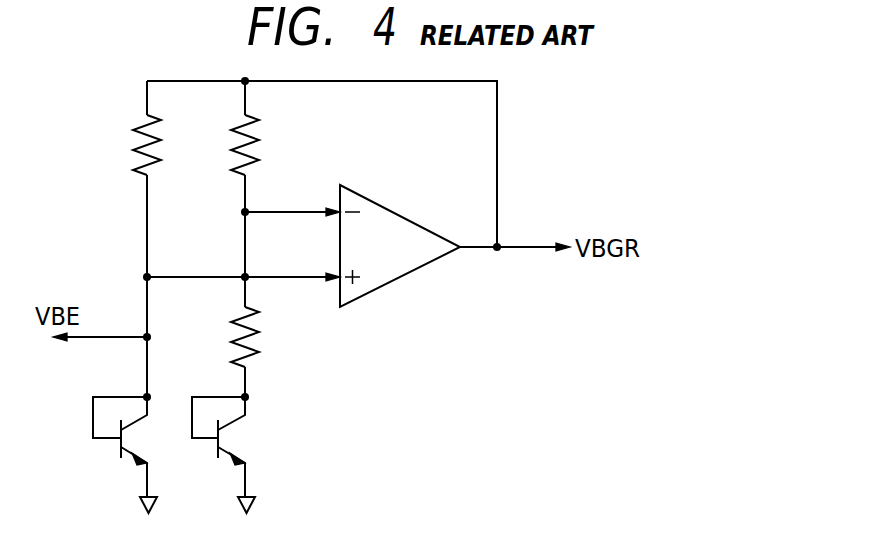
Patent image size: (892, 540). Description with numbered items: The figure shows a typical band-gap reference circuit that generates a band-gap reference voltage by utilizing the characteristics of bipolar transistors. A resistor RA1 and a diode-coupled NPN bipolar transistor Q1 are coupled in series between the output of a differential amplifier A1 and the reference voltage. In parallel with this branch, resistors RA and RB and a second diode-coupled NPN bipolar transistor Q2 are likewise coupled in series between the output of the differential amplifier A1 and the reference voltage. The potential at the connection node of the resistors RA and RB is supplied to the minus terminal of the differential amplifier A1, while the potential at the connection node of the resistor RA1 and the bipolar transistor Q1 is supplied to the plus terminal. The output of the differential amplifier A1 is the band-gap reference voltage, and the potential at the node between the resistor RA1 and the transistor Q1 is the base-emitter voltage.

The resistor RA1 is at (138, 155).
The resistor RA is at (237, 155).
The resistor RB is at (248, 347).
The differential amplifier A1 is at (408, 217).
The diode-coupled NPN bipolar transistor Q1 is at (118, 450).
The diode-coupled NPN bipolar transistor Q2 is at (217, 450).